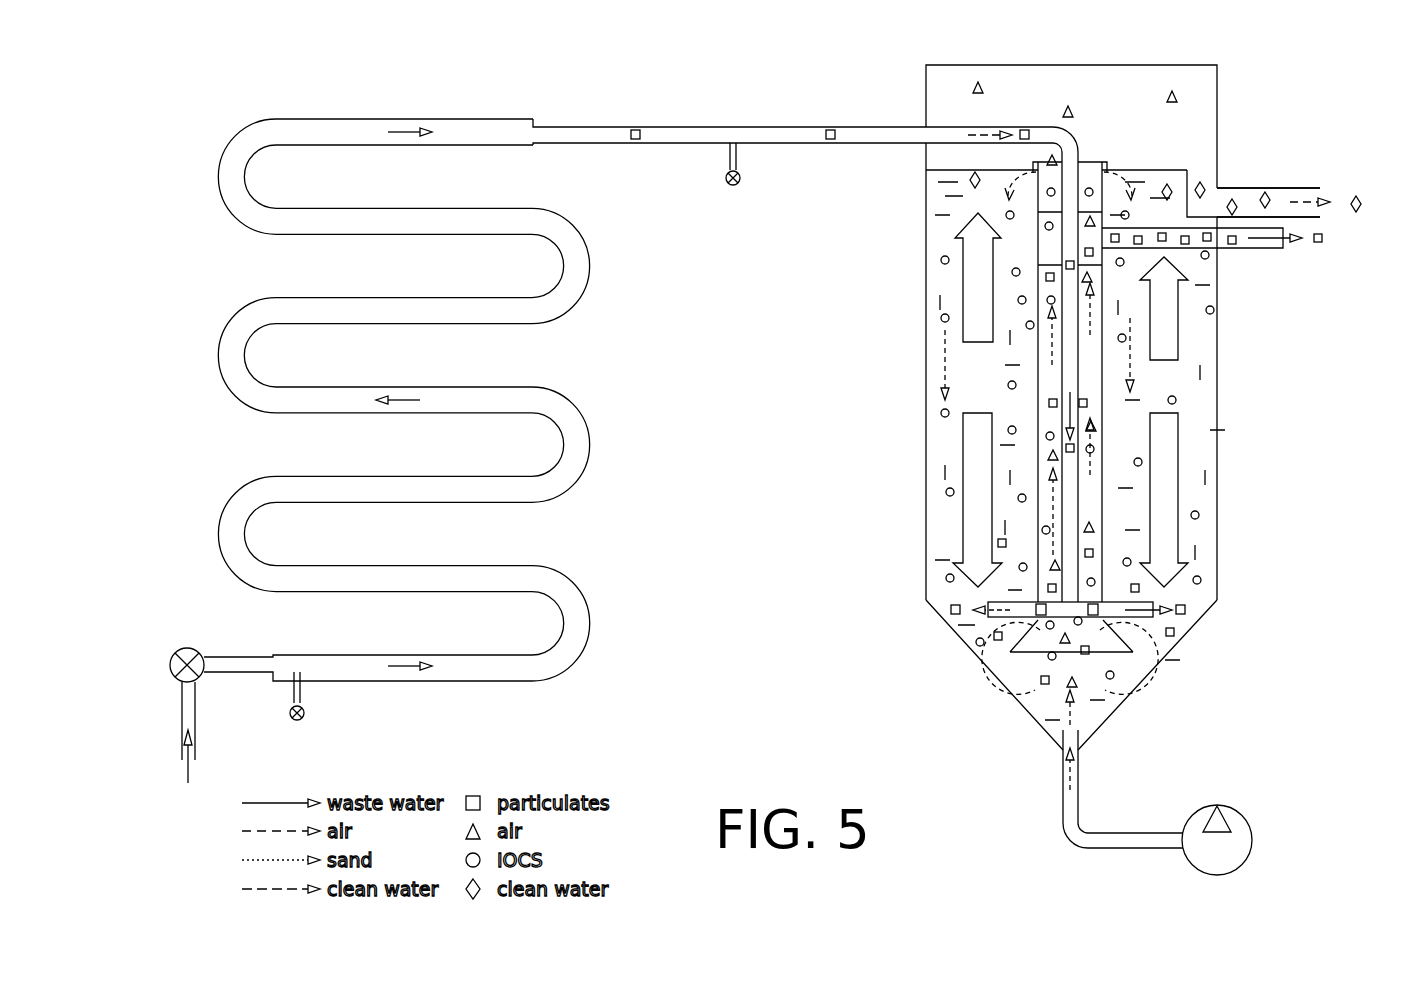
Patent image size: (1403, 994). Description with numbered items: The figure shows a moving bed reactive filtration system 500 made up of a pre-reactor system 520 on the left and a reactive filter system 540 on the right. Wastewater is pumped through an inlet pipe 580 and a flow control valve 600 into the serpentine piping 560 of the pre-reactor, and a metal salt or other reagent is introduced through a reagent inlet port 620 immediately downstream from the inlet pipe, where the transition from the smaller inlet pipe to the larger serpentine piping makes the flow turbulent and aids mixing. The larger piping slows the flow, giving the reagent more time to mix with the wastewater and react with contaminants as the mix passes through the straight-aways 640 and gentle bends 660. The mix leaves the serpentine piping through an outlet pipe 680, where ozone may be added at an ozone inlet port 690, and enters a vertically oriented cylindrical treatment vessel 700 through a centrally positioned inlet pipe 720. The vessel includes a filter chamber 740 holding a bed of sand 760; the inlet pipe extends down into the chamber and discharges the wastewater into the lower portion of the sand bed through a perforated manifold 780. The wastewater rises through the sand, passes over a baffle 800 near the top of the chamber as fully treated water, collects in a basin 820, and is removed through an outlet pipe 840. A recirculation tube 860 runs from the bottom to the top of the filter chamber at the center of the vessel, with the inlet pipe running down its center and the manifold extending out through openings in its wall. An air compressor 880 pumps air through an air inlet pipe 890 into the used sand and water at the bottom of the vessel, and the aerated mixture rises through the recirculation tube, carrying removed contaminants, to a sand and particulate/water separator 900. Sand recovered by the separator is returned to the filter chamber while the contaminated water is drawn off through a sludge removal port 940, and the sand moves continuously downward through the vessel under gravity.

The moving bed reactive filtration system 500 is at (736, 80).
The pre-reactor system 520 is at (200, 124).
The reactive filter system 540 is at (1264, 345).
The serpentine piping 560 is at (555, 568).
The inlet pipe 580 is at (190, 713).
The flow control valve 600 is at (190, 647).
The reagent inlet port 620 is at (301, 690).
The straight-aways 640 is at (455, 565).
The gentle bends 660 is at (590, 285).
The outlet pipe 680 is at (585, 146).
The ozone inlet port 690 is at (738, 156).
The treatment vessel 700 is at (1218, 88).
The inlet pipe 720 is at (1072, 312).
The filter chamber 740 is at (927, 348).
The bed of sand 760 is at (935, 445).
The perforated manifold 780 is at (1160, 643).
The baffle 800 is at (1190, 174).
The basin 820 is at (1200, 184).
The outlet pipe 840 is at (1297, 188).
The recirculation tube 860 is at (1103, 374).
The air compressor 880 is at (1250, 818).
The air inlet pipe 890 is at (1063, 800).
The sand and particulate/water separator 900 is at (1050, 240).
The sludge removal port 940 is at (1255, 252).